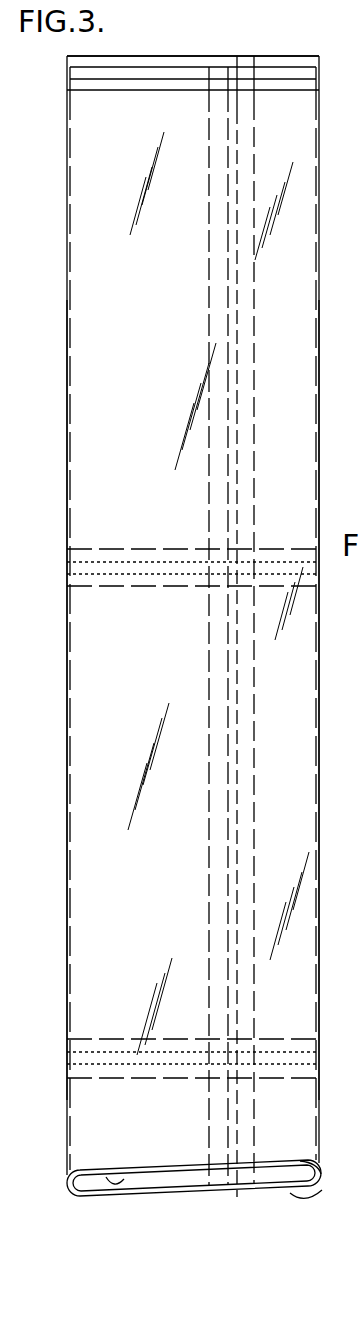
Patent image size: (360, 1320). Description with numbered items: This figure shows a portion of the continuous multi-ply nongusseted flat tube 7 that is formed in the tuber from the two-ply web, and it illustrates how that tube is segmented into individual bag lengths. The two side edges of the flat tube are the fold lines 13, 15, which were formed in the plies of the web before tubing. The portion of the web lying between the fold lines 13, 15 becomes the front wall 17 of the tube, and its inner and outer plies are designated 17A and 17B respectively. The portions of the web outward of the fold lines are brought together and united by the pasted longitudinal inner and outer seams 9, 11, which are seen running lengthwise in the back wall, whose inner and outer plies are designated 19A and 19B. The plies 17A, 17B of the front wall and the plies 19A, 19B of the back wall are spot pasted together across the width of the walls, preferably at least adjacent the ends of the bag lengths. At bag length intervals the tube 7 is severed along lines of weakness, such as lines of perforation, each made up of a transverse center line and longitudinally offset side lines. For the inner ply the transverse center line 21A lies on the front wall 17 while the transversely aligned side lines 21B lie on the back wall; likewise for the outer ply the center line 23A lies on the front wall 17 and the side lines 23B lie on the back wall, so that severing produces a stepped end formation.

The continuous flat tube 7 is at (62, 347).
The inner longitudinal seam 9 is at (208, 686).
The outer longitudinal seam 11 is at (255, 770).
The fold line 13 is at (320, 692).
The fold line 15 is at (66, 700).
The front wall 17 is at (185, 285).
The inner ply of front wall 17A is at (110, 1178).
The outer ply of front wall 17B is at (159, 1167).
The inner ply of back wall 19A is at (312, 1163).
The outer ply of back wall 19B is at (318, 1192).
The transverse center line 21A is at (201, 67).
The transverse side lines 21B is at (164, 80).
The transverse center line 23A is at (273, 57).
The transverse side lines 23B is at (103, 91).